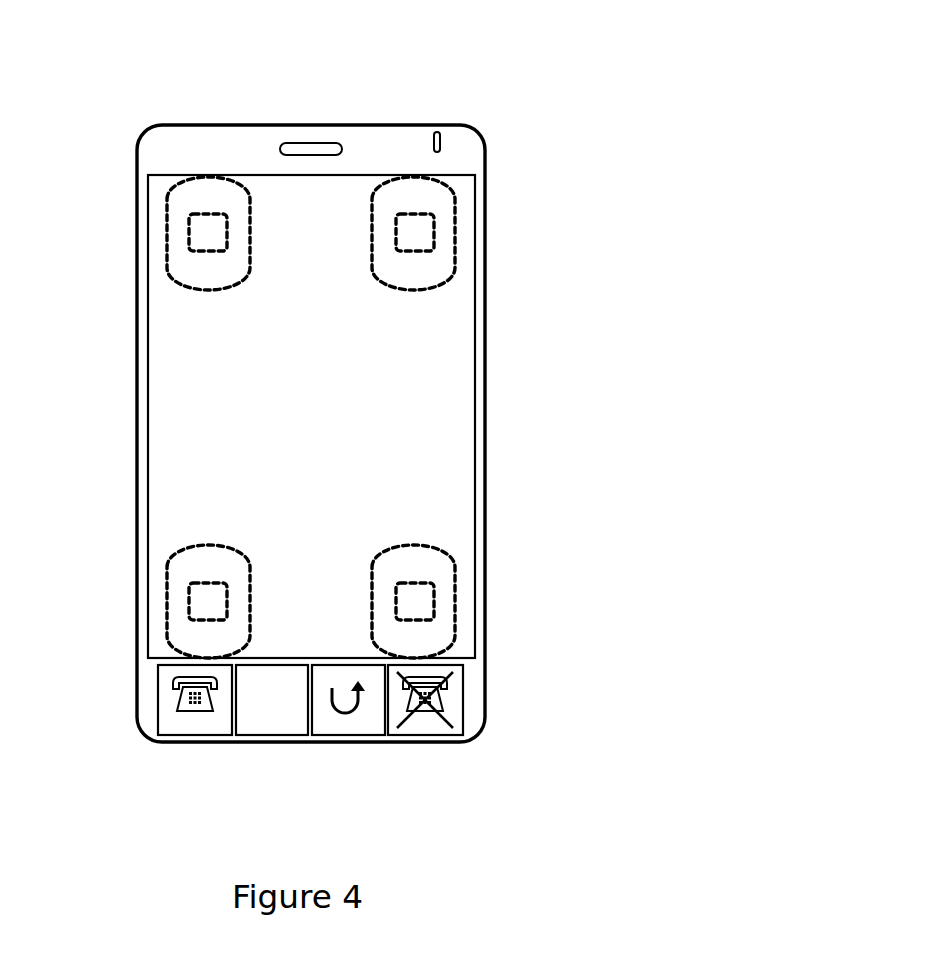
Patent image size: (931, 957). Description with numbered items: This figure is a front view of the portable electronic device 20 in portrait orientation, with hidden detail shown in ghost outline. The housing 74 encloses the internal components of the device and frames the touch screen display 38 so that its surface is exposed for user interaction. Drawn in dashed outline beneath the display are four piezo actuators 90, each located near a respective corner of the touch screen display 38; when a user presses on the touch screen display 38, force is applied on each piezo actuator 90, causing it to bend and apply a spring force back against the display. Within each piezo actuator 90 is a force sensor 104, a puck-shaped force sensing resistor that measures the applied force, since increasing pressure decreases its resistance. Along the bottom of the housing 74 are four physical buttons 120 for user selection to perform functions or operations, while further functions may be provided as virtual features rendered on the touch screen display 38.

The portable electronic device 20 is at (536, 71).
The touch screen display 38 is at (448, 500).
The housing 74 is at (483, 348).
The piezo actuator 90 is at (167, 195).
The force sensor 104 is at (205, 232).
The physical buttons 120 is at (425, 725).